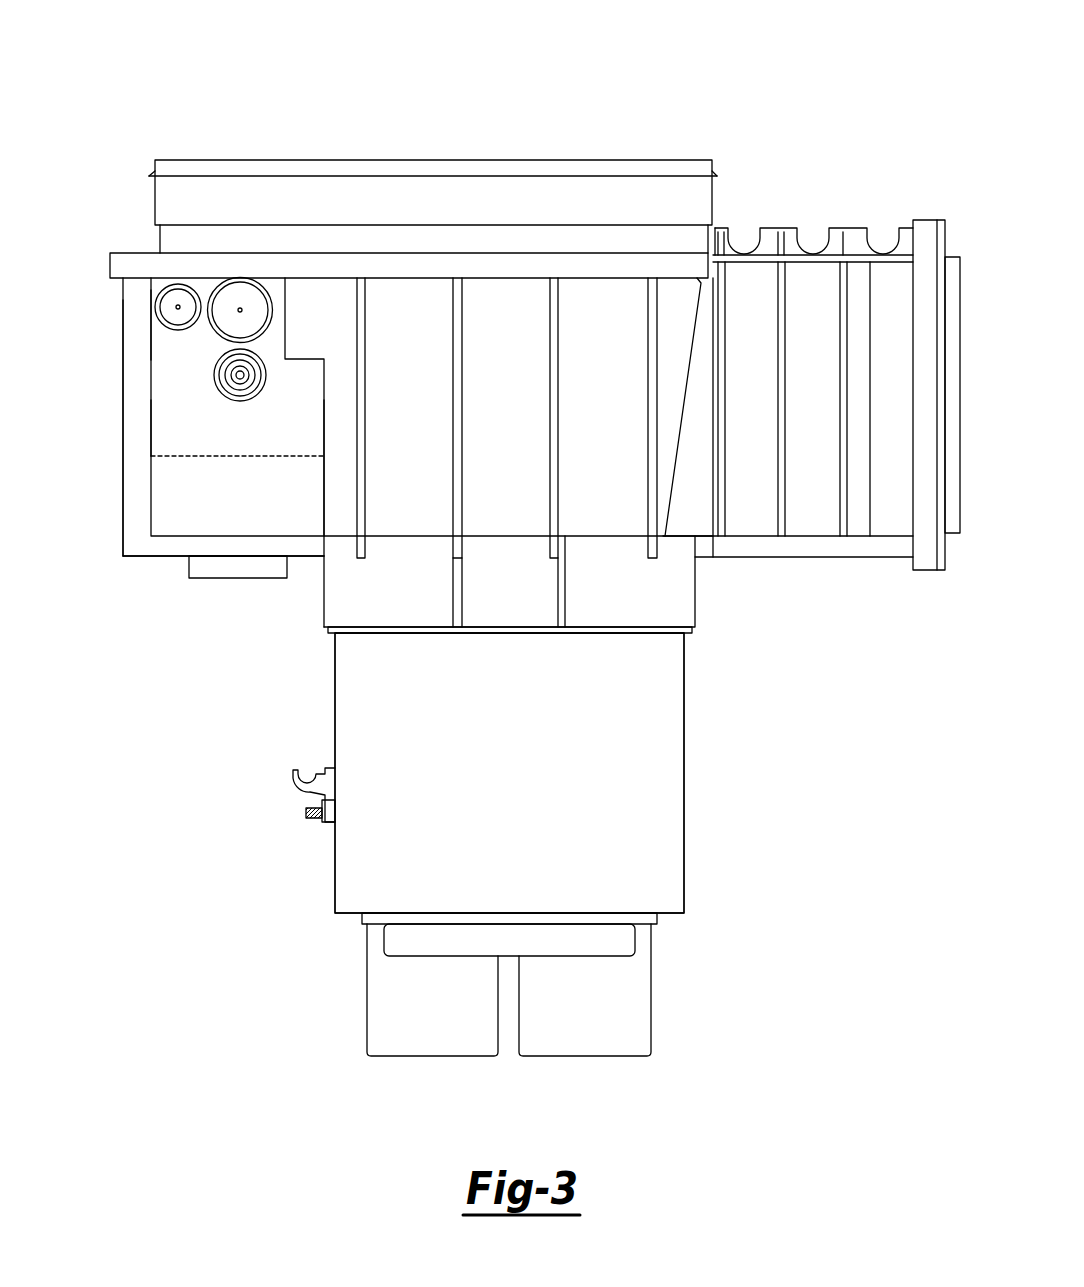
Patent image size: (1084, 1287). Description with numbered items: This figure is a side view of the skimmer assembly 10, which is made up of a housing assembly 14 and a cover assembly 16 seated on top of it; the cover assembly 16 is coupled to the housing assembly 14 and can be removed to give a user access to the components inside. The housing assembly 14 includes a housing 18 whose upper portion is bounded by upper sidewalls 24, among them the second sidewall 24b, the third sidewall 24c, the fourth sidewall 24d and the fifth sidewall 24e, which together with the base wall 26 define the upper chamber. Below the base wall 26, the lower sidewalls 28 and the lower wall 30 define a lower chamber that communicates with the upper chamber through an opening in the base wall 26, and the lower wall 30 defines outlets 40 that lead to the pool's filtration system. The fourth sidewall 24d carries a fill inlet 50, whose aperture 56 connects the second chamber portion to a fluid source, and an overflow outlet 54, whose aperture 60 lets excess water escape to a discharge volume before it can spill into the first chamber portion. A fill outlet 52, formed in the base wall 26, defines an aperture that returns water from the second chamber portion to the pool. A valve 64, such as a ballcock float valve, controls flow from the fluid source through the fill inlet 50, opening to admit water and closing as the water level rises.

The skimmer assembly 10 is at (743, 96).
The housing assembly 14 is at (305, 680).
The cover assembly 16 is at (143, 152).
The housing 18 is at (124, 487).
The upper sidewalls 24 is at (511, 443).
The second sidewall 24b is at (603, 483).
The third sidewall 24c is at (321, 425).
The fourth sidewall 24d is at (167, 438).
The fifth sidewall 24e is at (151, 324).
The base wall 26 is at (150, 558).
The lower sidewalls 28 is at (628, 743).
The lower wall 30 is at (598, 924).
The outlets 40 is at (398, 1002).
The fill inlet 50 is at (246, 392).
The fill outlet 52 is at (196, 578).
The overflow outlet 54 is at (252, 353).
The aperture 56 is at (247, 377).
The aperture 60 is at (216, 377).
The valve 64 is at (258, 363).